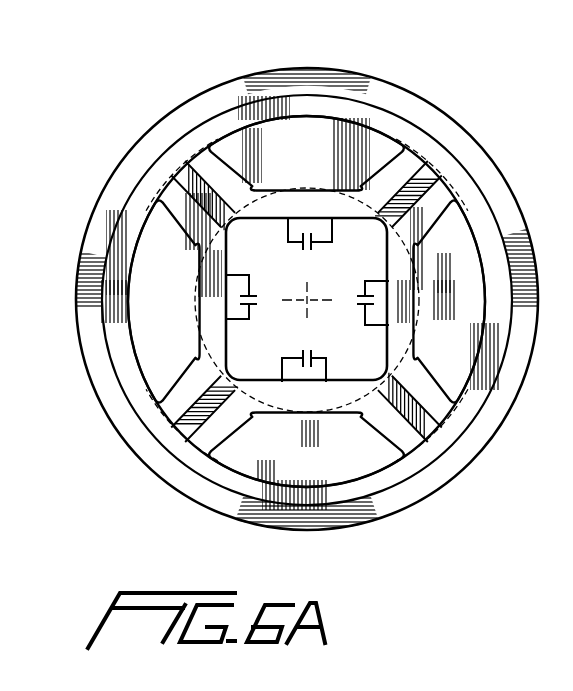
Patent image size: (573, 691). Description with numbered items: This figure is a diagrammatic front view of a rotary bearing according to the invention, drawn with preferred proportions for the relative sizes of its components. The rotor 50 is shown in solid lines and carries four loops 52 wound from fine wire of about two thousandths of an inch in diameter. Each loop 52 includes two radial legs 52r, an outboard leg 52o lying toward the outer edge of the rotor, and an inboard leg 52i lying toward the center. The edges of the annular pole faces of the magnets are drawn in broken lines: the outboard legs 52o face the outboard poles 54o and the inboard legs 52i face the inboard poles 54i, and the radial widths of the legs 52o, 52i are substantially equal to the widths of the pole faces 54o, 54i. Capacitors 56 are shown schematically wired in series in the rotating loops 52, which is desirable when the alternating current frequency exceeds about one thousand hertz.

The rotor 50 is at (473, 137).
The loops 52 is at (193, 130).
The outboard leg 52o is at (328, 97).
The inboard leg 52i is at (222, 248).
The radial legs 52r is at (497, 203).
The inboard poles 54i is at (387, 220).
The outboard poles 54o is at (437, 168).
The capacitors 56 is at (267, 337).